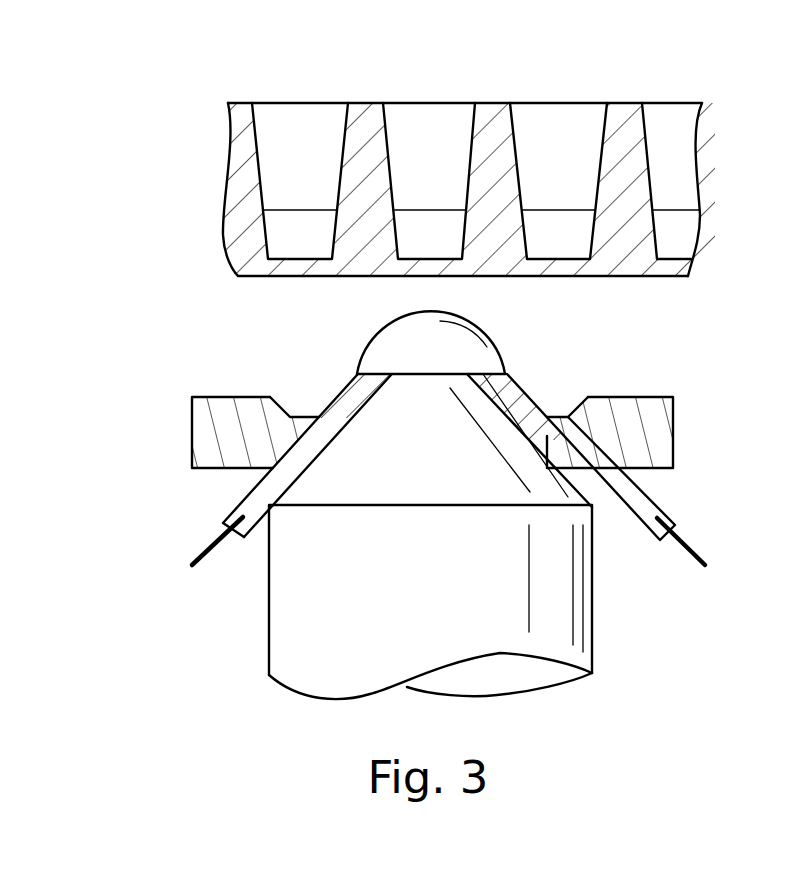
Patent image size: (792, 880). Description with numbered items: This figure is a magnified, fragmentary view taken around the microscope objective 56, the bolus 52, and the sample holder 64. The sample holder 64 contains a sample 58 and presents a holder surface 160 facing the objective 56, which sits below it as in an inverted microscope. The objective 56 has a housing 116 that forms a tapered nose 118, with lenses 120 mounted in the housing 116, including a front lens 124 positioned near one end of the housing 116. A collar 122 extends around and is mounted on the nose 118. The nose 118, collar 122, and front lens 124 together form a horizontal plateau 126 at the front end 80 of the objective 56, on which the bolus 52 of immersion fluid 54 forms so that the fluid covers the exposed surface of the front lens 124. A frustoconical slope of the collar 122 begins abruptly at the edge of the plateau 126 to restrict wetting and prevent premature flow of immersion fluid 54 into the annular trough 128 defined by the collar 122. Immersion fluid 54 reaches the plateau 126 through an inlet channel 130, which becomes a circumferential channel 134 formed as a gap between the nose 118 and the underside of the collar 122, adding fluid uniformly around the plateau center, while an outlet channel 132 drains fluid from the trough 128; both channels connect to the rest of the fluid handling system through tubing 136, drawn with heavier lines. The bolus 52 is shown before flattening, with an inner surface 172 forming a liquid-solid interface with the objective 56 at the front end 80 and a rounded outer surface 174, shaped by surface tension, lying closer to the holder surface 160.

The sample holder 64 is at (492, 103).
The sample 58 is at (433, 290).
The holder surface 160 is at (430, 288).
The bolus 52 is at (397, 320).
The rounded outer surface 174 is at (484, 332).
The front end 80 is at (451, 374).
The horizontal plateau 126 is at (500, 358).
The immersion fluid 54 is at (358, 370).
The inlet channel 130 is at (279, 494).
The circumferential channel 134 is at (334, 428).
The outlet channel 132 is at (650, 500).
The tapered nose 118 is at (578, 485).
The inner surface 172 is at (453, 376).
The front lens 124 is at (436, 388).
The collar 122 is at (192, 433).
The annular trough 128 is at (285, 414).
The tubing 136 is at (215, 538).
The housing 116 is at (592, 598).
The objective 56 is at (268, 582).
The lenses 120 is at (348, 653).